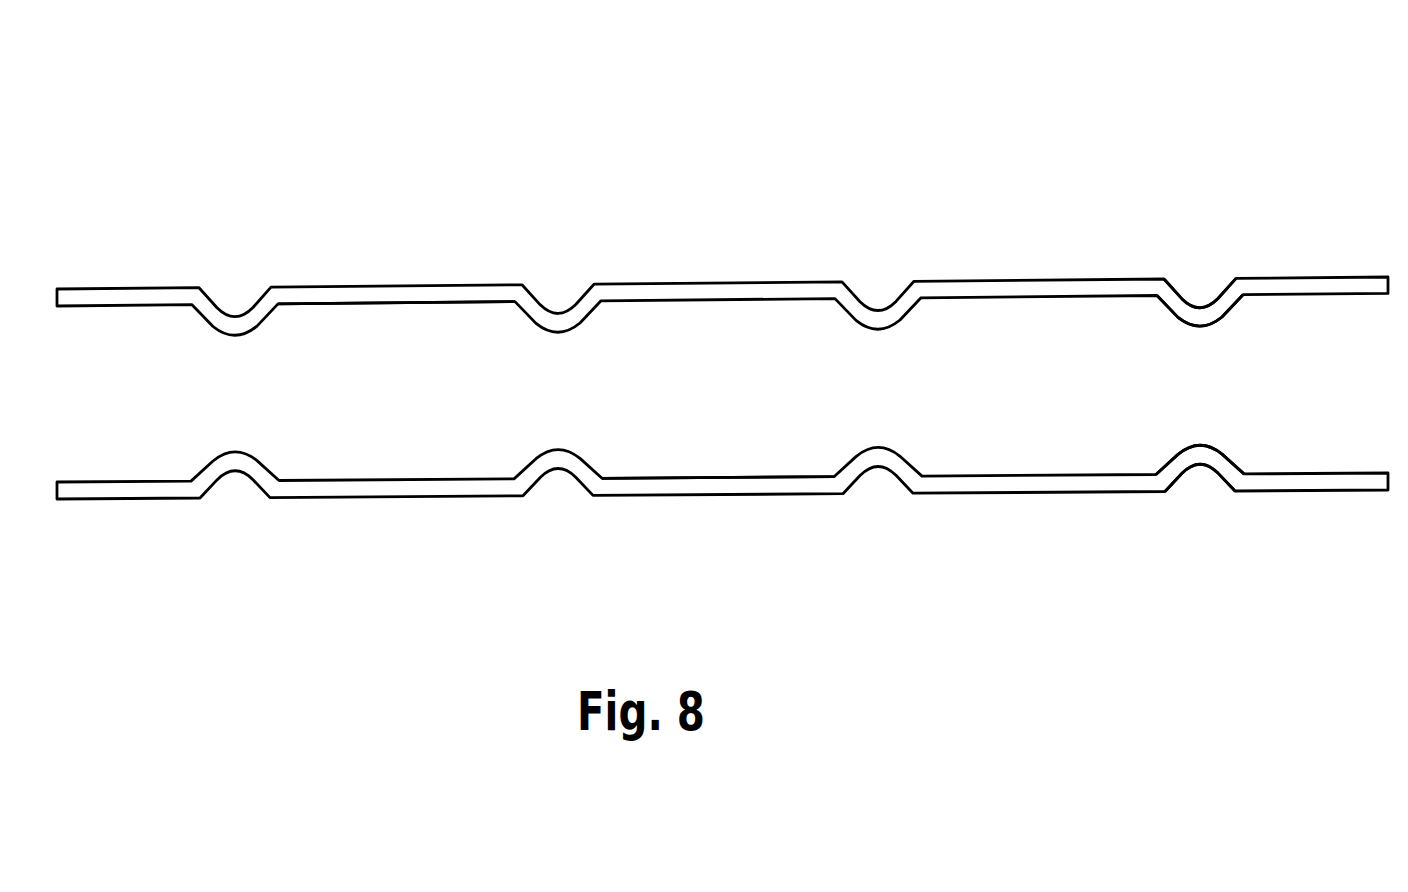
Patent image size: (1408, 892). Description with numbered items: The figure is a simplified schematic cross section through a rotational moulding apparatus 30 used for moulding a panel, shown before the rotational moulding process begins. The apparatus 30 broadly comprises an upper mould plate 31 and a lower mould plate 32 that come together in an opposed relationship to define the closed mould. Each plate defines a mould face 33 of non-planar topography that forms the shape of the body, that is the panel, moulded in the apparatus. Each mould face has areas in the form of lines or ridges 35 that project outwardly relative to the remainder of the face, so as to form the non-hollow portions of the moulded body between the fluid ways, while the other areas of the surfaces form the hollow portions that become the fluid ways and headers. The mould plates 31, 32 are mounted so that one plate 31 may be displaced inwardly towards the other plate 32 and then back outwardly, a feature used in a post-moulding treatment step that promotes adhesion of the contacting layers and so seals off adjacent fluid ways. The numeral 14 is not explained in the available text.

The rotational moulding apparatus 30 is at (678, 168).
The upper mould plate 31 is at (107, 297).
The lower mould plate 32 is at (324, 487).
The mould face 33 is at (367, 304).
The gasket layer 14 is at (728, 477).
The ridges 35 is at (1203, 327).